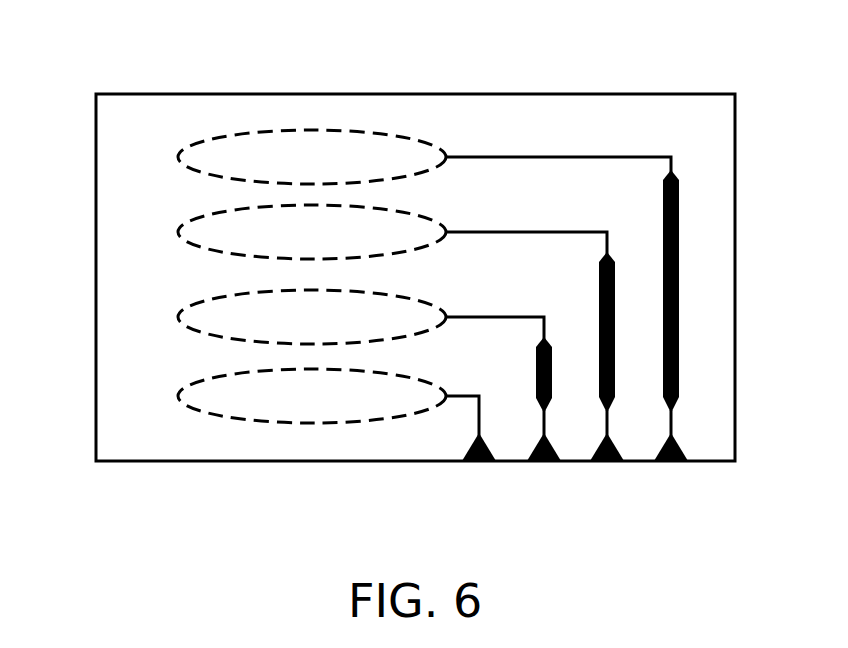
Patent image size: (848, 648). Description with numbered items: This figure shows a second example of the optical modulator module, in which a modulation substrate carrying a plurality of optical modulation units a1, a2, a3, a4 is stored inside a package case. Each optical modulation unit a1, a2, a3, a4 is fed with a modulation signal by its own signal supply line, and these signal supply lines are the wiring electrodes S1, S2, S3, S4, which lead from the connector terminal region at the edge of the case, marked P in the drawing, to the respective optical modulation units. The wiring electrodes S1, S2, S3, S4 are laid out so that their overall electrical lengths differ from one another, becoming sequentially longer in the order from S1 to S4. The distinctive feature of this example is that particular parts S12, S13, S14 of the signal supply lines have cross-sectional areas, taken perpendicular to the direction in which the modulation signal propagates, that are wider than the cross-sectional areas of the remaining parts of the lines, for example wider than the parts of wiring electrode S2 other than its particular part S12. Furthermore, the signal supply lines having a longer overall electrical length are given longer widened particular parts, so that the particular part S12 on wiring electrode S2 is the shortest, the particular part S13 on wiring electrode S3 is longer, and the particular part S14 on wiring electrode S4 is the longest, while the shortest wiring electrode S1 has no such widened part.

The optical modulation unit a1 is at (177, 396).
The optical modulation unit a2 is at (177, 317).
The optical modulation unit a3 is at (177, 232).
The optical modulation unit a4 is at (177, 157).
The wiring electrode S1 is at (477, 417).
The wiring electrode S2 is at (490, 317).
The wiring electrode S3 is at (525, 232).
The wiring electrode S4 is at (610, 157).
The particular part of signal supply line S12 is at (553, 383).
The particular part of signal supply line S13 is at (615, 375).
The particular part of signal supply line S14 is at (680, 333).
The terminal pad P is at (670, 461).